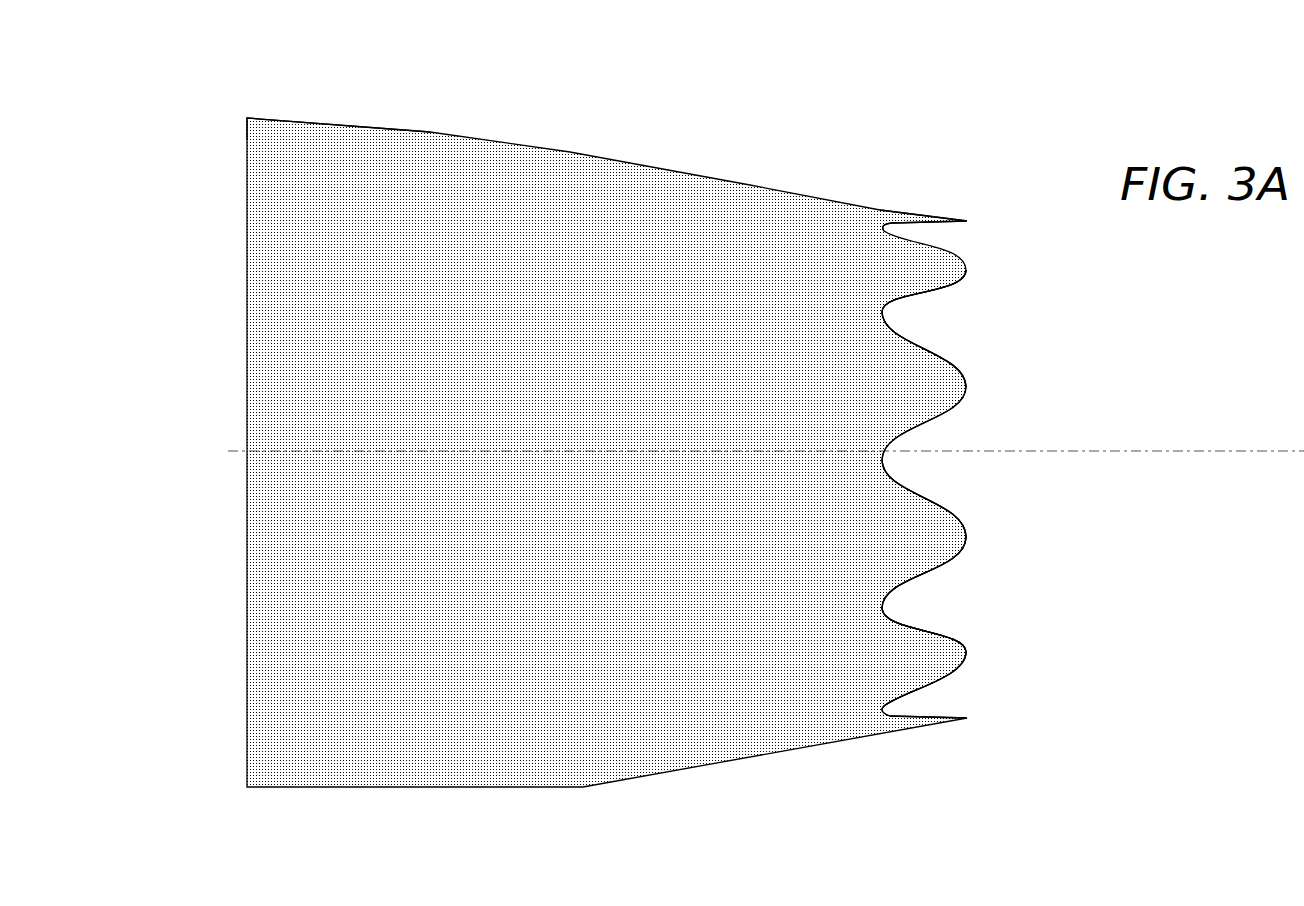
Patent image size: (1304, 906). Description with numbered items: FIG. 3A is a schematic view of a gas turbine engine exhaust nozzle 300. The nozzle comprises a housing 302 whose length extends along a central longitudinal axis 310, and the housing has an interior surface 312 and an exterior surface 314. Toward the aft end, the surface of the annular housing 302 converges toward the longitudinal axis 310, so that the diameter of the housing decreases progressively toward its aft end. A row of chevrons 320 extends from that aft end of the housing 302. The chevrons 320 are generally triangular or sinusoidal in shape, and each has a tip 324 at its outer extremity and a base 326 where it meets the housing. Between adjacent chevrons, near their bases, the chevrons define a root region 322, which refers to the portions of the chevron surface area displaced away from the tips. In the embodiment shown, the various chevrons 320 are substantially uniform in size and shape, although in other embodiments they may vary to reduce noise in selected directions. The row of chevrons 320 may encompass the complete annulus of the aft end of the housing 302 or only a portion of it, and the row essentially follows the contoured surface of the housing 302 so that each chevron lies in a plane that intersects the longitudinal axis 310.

The gas turbine engine exhaust nozzle 300 is at (599, 74).
The housing 302 is at (484, 293).
The central longitudinal axis 310 is at (1079, 449).
The interior surface 312 is at (920, 226).
The exterior surface 314 is at (277, 111).
The row of chevrons 320 is at (919, 671).
The root region 322 is at (863, 321).
The tip 324 is at (968, 658).
The base 326 is at (884, 315).